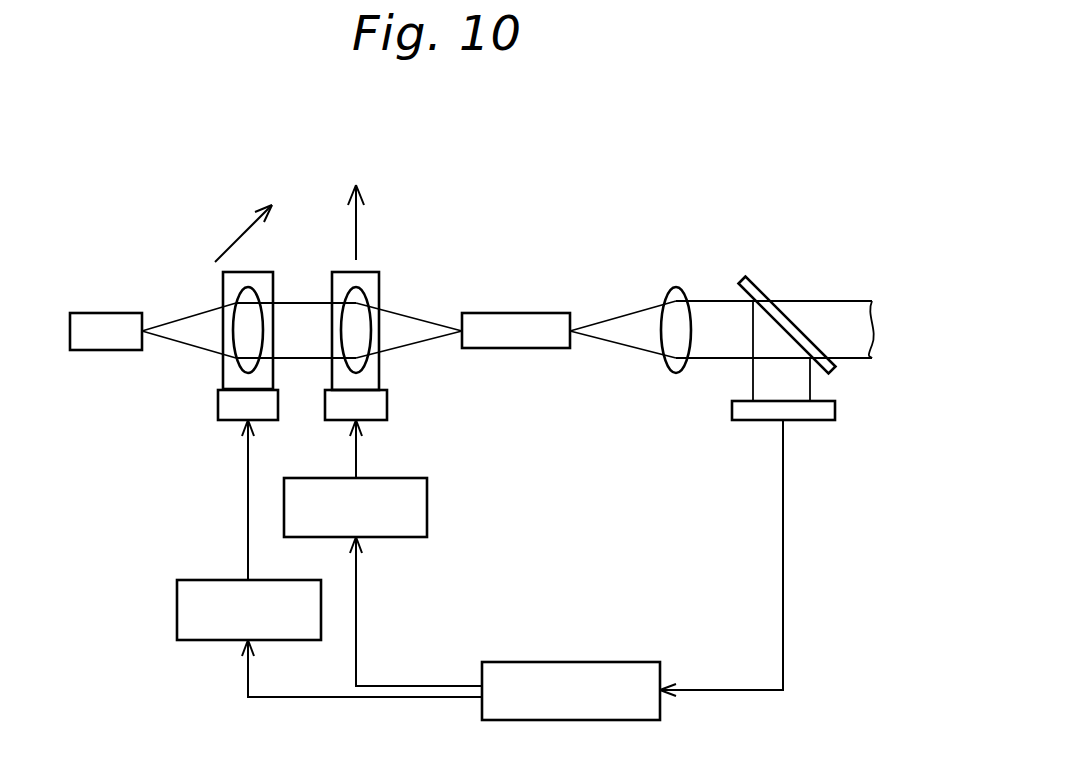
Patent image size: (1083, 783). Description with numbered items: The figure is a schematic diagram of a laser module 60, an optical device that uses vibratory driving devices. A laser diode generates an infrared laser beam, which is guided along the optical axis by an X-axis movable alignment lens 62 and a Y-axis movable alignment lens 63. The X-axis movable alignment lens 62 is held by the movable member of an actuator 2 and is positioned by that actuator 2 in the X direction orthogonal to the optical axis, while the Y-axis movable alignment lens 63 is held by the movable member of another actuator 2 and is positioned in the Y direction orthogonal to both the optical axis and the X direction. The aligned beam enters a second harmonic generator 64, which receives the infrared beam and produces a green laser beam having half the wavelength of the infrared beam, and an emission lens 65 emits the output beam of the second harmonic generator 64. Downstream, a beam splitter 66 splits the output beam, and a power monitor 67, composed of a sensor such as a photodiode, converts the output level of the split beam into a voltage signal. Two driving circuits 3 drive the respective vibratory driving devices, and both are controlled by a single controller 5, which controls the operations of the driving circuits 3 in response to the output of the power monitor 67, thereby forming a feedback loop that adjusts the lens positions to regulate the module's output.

The laser module 60 is at (193, 207).
The second harmonic generator 64 is at (100, 312).
The X-axis movable alignment lens 62 is at (223, 285).
The Y-axis movable alignment lens 63 is at (380, 295).
The actuator 2 is at (218, 405).
The driving circuit 3 is at (207, 578).
The controller 5 is at (568, 660).
The emission lens 65 is at (676, 287).
The beam splitter 66 is at (770, 290).
The power monitor 67 is at (812, 424).